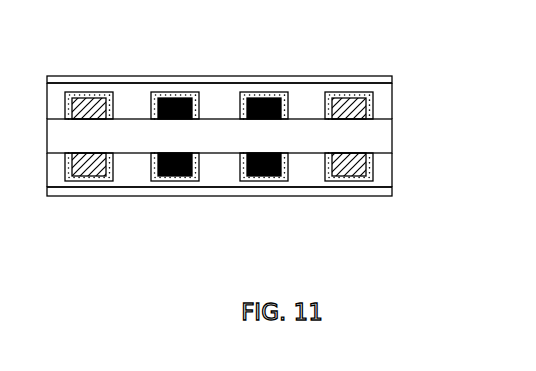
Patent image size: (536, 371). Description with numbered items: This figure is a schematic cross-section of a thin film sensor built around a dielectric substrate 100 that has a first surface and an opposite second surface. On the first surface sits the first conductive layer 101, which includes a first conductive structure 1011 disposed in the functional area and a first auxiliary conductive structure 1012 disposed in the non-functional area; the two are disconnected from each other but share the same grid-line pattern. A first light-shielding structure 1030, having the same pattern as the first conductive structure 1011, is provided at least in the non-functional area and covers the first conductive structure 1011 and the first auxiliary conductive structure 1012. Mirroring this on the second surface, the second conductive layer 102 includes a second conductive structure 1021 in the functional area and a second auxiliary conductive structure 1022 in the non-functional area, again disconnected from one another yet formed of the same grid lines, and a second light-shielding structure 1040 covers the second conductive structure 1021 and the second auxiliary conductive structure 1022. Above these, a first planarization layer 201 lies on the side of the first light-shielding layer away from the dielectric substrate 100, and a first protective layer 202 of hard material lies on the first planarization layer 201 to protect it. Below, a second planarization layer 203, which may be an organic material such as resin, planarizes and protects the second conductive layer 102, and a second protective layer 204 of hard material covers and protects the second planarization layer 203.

The dielectric substrate 100 is at (392, 137).
The first conductive layer 101 is at (332, 63).
The first conductive structure 1011 is at (264, 98).
The first auxiliary conductive structure 1012 is at (343, 100).
The second conductive layer 102 is at (332, 211).
The second conductive structure 1021 is at (283, 172).
The second auxiliary conductive structure 1022 is at (346, 176).
The first light-shielding structure 1030 is at (373, 104).
The second light-shielding structure 1040 is at (373, 168).
The first planarization layer 201 is at (212, 105).
The first protective layer 202 is at (173, 84).
The second planarization layer 203 is at (136, 177).
The second protective layer 204 is at (197, 193).